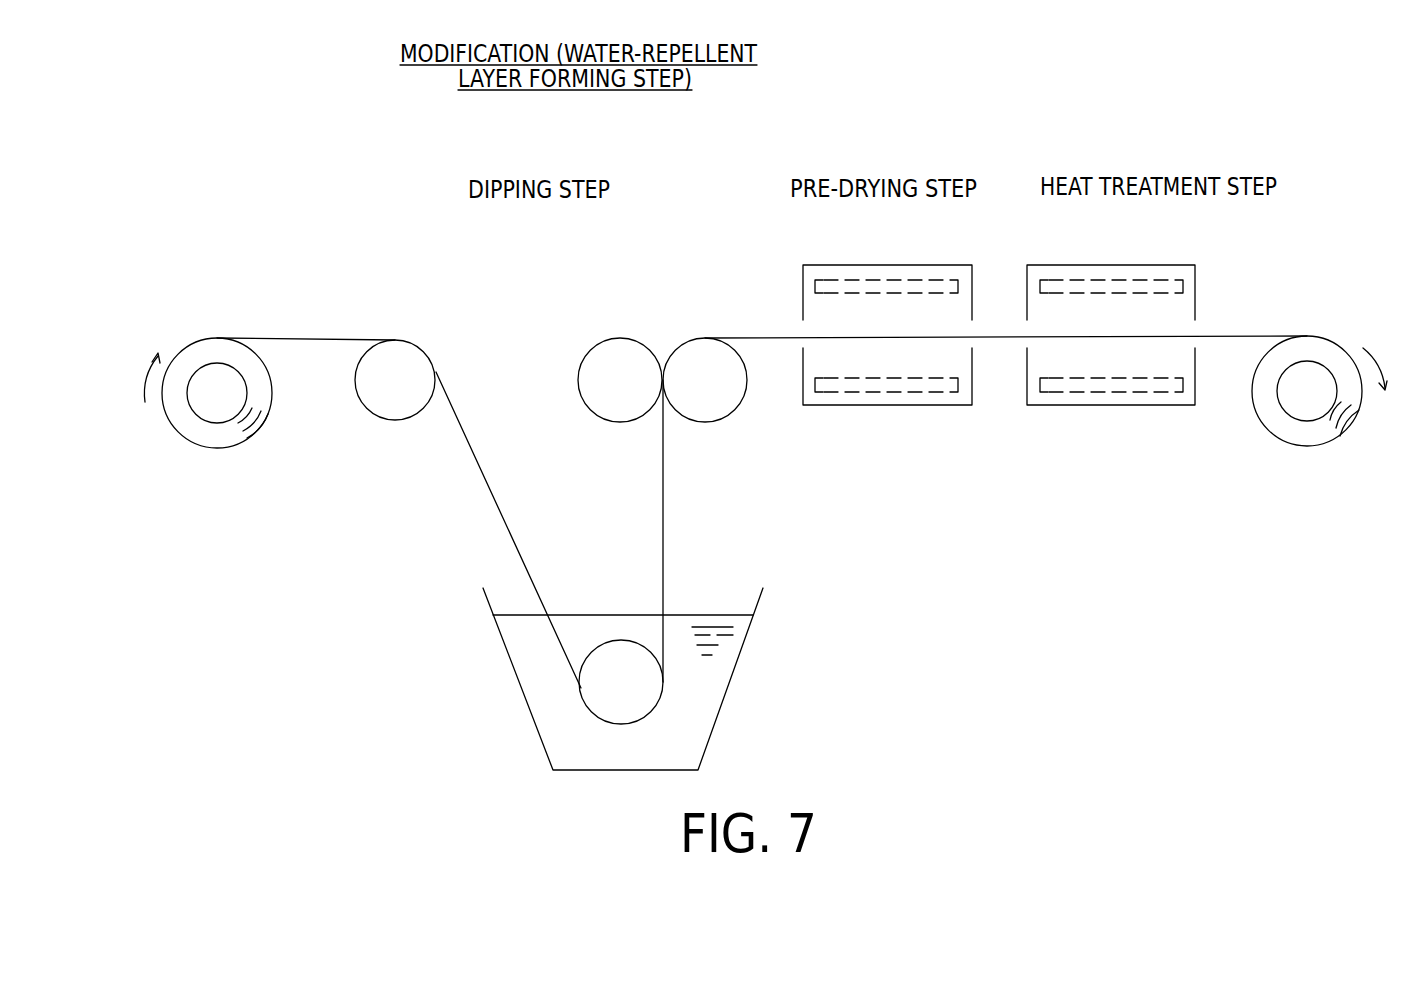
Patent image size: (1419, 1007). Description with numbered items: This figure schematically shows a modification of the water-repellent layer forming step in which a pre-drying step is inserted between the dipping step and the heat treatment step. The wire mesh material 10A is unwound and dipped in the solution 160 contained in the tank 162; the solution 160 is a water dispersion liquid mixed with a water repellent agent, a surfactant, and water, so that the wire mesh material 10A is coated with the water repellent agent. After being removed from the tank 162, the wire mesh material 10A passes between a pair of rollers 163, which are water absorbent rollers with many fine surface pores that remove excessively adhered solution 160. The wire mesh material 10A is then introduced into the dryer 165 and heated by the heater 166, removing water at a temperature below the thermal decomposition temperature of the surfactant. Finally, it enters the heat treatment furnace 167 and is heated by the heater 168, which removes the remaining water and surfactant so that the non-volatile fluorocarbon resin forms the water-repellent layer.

The wire mesh material 10A is at (285, 325).
The solution 160 is at (697, 613).
The tank 162 is at (720, 708).
The rollers 163 is at (598, 418).
The dryer 165 is at (933, 405).
The heater 166 is at (853, 388).
The heat treatment furnace 167 is at (1153, 405).
The heater 168 is at (1077, 388).